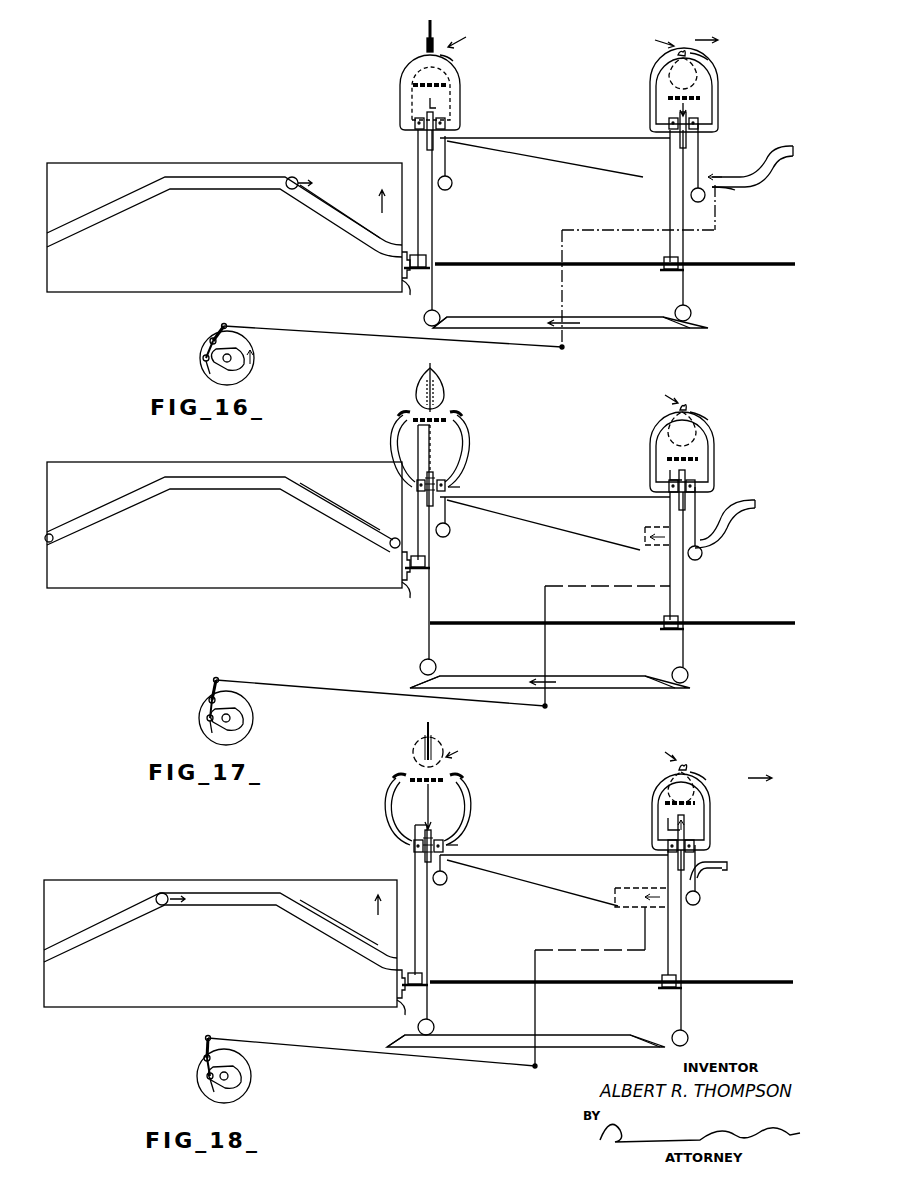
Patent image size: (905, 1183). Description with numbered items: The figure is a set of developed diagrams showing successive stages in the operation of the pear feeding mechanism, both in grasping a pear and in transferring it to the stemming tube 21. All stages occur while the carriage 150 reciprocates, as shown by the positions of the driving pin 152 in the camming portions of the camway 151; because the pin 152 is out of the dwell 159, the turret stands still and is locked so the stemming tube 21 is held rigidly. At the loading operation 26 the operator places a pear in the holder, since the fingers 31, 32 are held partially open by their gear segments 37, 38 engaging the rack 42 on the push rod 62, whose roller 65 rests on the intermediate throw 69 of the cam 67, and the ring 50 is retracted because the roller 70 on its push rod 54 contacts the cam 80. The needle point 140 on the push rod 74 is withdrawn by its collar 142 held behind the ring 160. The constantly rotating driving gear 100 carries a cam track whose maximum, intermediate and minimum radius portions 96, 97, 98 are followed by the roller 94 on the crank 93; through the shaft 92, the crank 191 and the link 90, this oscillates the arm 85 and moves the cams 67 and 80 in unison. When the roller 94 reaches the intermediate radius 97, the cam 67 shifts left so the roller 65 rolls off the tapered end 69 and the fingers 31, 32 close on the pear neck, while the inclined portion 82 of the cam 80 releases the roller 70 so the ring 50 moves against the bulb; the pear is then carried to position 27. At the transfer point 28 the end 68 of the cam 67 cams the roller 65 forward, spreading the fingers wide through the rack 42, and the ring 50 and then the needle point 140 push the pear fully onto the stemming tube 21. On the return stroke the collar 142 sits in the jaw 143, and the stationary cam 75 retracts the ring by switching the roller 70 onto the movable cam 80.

In FIG. 16, the stemming tube 21 is at (427, 25).
In FIG. 17, the stemming tube 21 is at (426, 367).
In FIG. 18, the stemming tube 21 is at (425, 728).
In FIG. 16, the loading operation position 26 is at (677, 42).
In FIG. 17, the loading operation position 26 is at (666, 397).
In FIG. 18, the loading operation position 26 is at (666, 755).
In FIG. 18, the position 27 is at (772, 779).
In FIG. 16, the transfer point 28 is at (465, 38).
In FIG. 18, the transfer point 28 is at (460, 752).
In FIG. 16, the finger 31 is at (455, 66).
In FIG. 17, the finger 31 is at (463, 420).
In FIG. 18, the finger 31 is at (466, 785).
In FIG. 16, the finger 32 is at (406, 66).
In FIG. 17, the finger 32 is at (397, 417).
In FIG. 18, the finger 32 is at (392, 778).
In FIG. 16, the gear segment 37 is at (446, 119).
In FIG. 16, the gear segment 38 is at (415, 120).
In FIG. 16, the rack 42 is at (427, 135).
In FIG. 17, the rack 42 is at (433, 473).
In FIG. 18, the rack 42 is at (432, 836).
In FIG. 16, the ring 50 is at (413, 90).
In FIG. 17, the ring 50 is at (444, 416).
In FIG. 18, the ring 50 is at (428, 784).
In FIG. 16, the push rod 54 is at (446, 157).
In FIG. 17, the push rod 54 is at (446, 512).
In FIG. 18, the push rod 54 is at (445, 840).
In FIG. 16, the push rod 62 is at (433, 224).
In FIG. 17, the push rod 62 is at (430, 608).
In FIG. 18, the push rod 62 is at (429, 948).
In FIG. 16, the roller 65 is at (438, 314).
In FIG. 17, the roller 65 is at (436, 664).
In FIG. 18, the roller 65 is at (434, 1024).
In FIG. 16, the cam 67 is at (614, 328).
In FIG. 17, the cam 67 is at (608, 688).
In FIG. 18, the cam 67 is at (590, 1048).
In FIG. 16, the cam end 68 is at (448, 316).
In FIG. 17, the cam end 68 is at (420, 680).
In FIG. 18, the cam end 68 is at (398, 1040).
In FIG. 16, the intermediate throw 69 is at (675, 333).
In FIG. 17, the intermediate throw 69 is at (680, 688).
In FIG. 18, the intermediate throw 69 is at (650, 1050).
In FIG. 16, the roller 70 is at (452, 183).
In FIG. 17, the roller 70 is at (449, 536).
In FIG. 18, the roller 70 is at (446, 884).
In FIG. 16, the push rod 74 is at (410, 156).
In FIG. 17, the push rod 74 is at (417, 452).
In FIG. 18, the push rod 74 is at (414, 866).
In FIG. 16, the cam 75 is at (610, 165).
In FIG. 17, the cam 75 is at (563, 518).
In FIG. 18, the cam 75 is at (591, 882).
In FIG. 16, the cam 80 is at (730, 188).
In FIG. 17, the cam 80 is at (645, 540).
In FIG. 18, the cam 80 is at (620, 907).
In FIG. 16, the inclined portion 82 is at (760, 156).
In FIG. 17, the inclined portion 82 is at (718, 532).
In FIG. 18, the inclined portion 82 is at (730, 868).
In FIG. 16, the arm 85 is at (558, 238).
In FIG. 17, the arm 85 is at (606, 647).
In FIG. 18, the arm 85 is at (589, 987).
In FIG. 16, the link 90 is at (393, 340).
In FIG. 17, the link 90 is at (370, 690).
In FIG. 18, the link 90 is at (378, 1062).
In FIG. 16, the shaft 92 is at (214, 334).
In FIG. 17, the shaft 92 is at (208, 695).
In FIG. 18, the shaft 92 is at (203, 1057).
In FIG. 16, the crank 93 is at (209, 342).
In FIG. 17, the crank 93 is at (207, 702).
In FIG. 18, the crank 93 is at (204, 1062).
In FIG. 16, the roller 94 is at (202, 358).
In FIG. 17, the roller 94 is at (205, 719).
In FIG. 18, the roller 94 is at (206, 1080).
In FIG. 16, the maximum-radius portion 96 is at (207, 372).
In FIG. 17, the intermediate radius portion 97 is at (210, 730).
In FIG. 18, the minimum radius portion 98 is at (212, 1094).
In FIG. 16, the driving gear 100 is at (255, 369).
In FIG. 17, the driving gear 100 is at (255, 718).
In FIG. 18, the driving gear 100 is at (252, 1084).
In FIG. 16, the needle point 140 is at (432, 107).
In FIG. 17, the needle point 140 is at (436, 412).
In FIG. 18, the needle point 140 is at (425, 825).
In FIG. 16, the collar 142 is at (424, 258).
In FIG. 17, the collar 142 is at (426, 570).
In FIG. 18, the collar 142 is at (424, 990).
In FIG. 16, the jaw 143 is at (393, 280).
In FIG. 17, the jaw 143 is at (397, 577).
In FIG. 18, the jaw 143 is at (391, 997).
In FIG. 16, the carriage 150 is at (352, 285).
In FIG. 17, the carriage 150 is at (350, 585).
In FIG. 18, the carriage 150 is at (335, 998).
In FIG. 16, the camway 151 is at (366, 228).
In FIG. 17, the camway 151 is at (332, 510).
In FIG. 18, the camway 151 is at (348, 940).
In FIG. 16, the driving pin 152 is at (291, 189).
In FIG. 17, the driving pin 152 is at (391, 544).
In FIG. 18, the driving pin 152 is at (165, 905).
In FIG. 16, the dwell 159 is at (215, 186).
In FIG. 17, the dwell 159 is at (225, 484).
In FIG. 18, the dwell 159 is at (240, 902).
In FIG. 16, the ring 160 is at (586, 266).
In FIG. 17, the ring 160 is at (586, 625).
In FIG. 18, the ring 160 is at (578, 985).
In FIG. 16, the crank 191 is at (221, 323).
In FIG. 17, the crank 191 is at (213, 682).
In FIG. 18, the crank 191 is at (205, 1045).